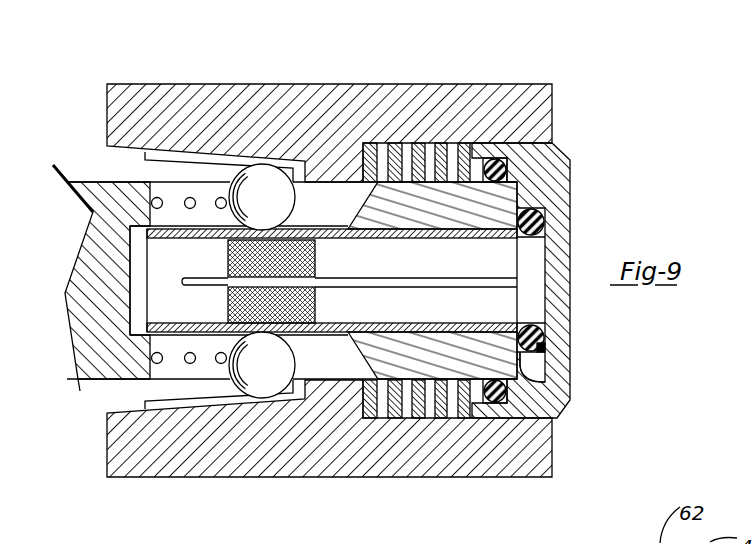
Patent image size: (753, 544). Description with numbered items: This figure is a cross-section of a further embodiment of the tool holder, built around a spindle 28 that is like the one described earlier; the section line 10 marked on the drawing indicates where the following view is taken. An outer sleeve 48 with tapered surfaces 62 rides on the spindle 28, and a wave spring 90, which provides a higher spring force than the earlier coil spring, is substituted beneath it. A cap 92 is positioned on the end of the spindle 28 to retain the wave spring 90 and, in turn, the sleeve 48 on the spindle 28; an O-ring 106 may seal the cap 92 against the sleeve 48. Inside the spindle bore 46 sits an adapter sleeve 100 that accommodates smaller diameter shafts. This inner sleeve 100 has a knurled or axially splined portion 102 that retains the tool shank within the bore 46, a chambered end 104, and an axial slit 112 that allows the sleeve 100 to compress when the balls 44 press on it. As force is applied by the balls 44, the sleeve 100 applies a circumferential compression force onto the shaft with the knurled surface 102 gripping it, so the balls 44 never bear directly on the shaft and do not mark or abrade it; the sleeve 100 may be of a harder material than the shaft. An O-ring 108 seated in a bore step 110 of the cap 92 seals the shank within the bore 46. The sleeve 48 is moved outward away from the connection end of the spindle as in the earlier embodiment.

The section line 10 is at (262, 5).
The spindle 28 is at (103, 193).
The balls 44 is at (252, 190).
The spindle bore 46 is at (380, 358).
The sleeve 48 is at (377, 100).
The tapered surfaces 62 is at (210, 402).
The wave spring 90 is at (462, 157).
The cap 92 is at (557, 163).
The sleeve 100 is at (500, 315).
The knurled or axially splined portion 102 is at (250, 303).
The chambered end 104 is at (517, 324).
The O-ring 106 is at (497, 400).
The O-ring 108 is at (545, 343).
The bore step 110 is at (525, 357).
The axial slit 112 is at (500, 277).